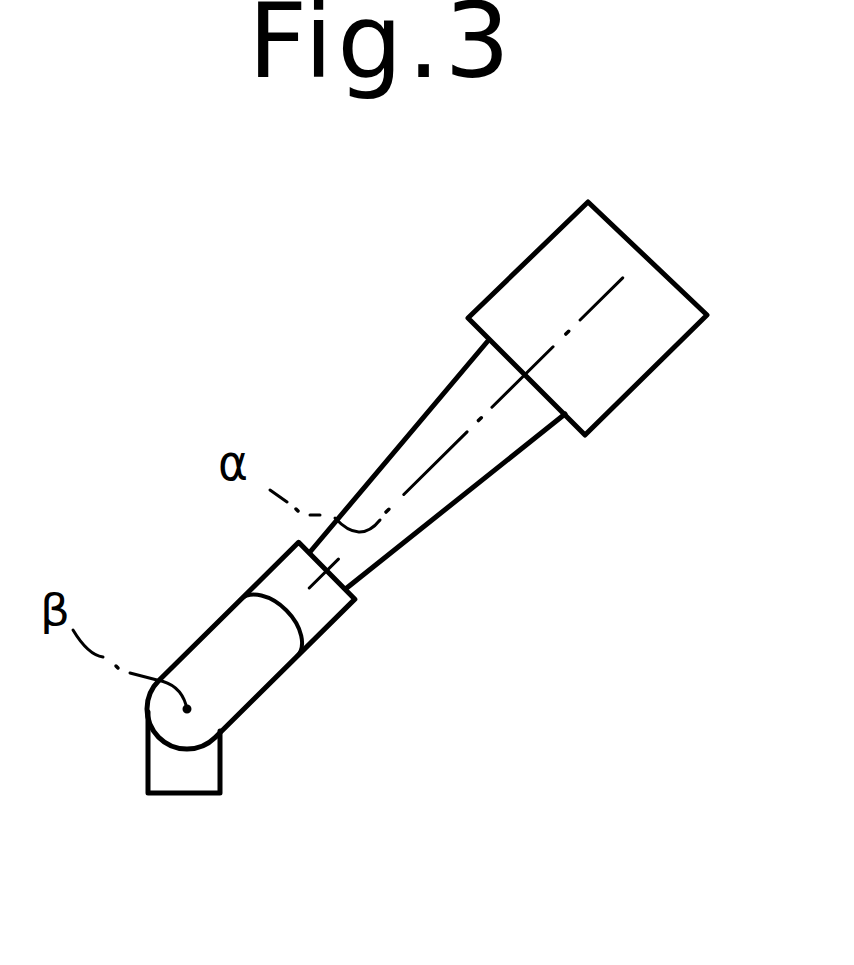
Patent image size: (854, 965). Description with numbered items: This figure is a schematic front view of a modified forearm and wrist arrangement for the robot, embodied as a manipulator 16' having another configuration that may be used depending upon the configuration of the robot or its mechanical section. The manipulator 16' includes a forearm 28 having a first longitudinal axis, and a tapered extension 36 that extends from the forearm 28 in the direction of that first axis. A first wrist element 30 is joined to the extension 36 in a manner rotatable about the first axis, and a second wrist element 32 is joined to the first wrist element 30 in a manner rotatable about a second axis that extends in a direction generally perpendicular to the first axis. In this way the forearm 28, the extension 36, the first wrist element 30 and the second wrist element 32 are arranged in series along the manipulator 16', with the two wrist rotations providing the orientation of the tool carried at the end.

The manipulator 16' is at (439, 564).
The forearm 28 is at (622, 367).
The first wrist element 30 is at (317, 620).
The second wrist element 32 is at (183, 778).
The tapered extension 36 is at (447, 488).